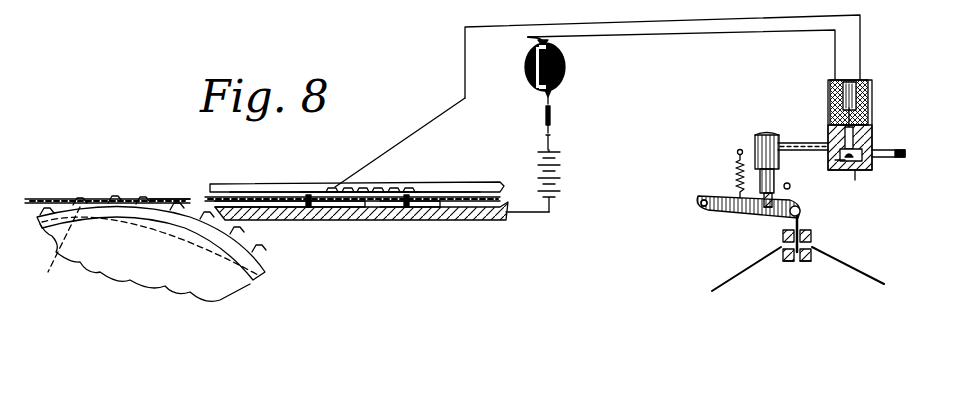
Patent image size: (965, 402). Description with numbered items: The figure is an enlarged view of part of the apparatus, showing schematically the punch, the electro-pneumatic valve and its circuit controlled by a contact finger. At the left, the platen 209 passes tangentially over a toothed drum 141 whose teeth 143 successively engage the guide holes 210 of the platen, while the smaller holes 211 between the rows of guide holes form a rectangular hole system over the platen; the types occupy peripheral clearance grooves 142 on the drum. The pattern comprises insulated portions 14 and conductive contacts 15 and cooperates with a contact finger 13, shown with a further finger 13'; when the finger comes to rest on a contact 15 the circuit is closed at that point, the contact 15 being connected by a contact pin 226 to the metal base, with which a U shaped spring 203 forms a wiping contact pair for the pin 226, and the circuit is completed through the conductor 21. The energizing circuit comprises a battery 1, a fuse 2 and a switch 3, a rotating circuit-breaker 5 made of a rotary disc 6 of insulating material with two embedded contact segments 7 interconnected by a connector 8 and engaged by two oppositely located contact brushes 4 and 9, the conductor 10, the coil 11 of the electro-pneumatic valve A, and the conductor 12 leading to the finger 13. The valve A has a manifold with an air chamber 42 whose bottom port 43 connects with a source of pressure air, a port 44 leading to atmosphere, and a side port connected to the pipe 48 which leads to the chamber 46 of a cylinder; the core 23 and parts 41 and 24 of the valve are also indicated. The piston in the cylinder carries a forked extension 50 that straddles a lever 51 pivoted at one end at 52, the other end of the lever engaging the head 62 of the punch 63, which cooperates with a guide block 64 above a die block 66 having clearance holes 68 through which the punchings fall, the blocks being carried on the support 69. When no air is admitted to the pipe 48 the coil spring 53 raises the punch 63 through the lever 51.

The platen 209 is at (62, 197).
The teeth 143 is at (105, 197).
The guide holes 210 is at (173, 197).
The holes 211 is at (248, 197).
The peripheral clearance grooves 142 is at (58, 250).
The toothed drum 141 is at (245, 250).
The contact pin 226 is at (320, 205).
The U shaped spring 203 is at (422, 210).
The insulated portions 14 is at (300, 190).
The contact connection 13' is at (360, 162).
The contacts 15 is at (385, 186).
The contact finger 13 is at (401, 142).
The conductor 12 is at (465, 60).
The conductor 10 is at (652, 34).
The contact brush 9 is at (543, 42).
The rotating circuit-breaker 5 is at (562, 54).
The rotary disc 6 is at (564, 74).
The connector 8 is at (531, 64).
The contact segments 7 is at (537, 46).
The contact brush 4 is at (552, 97).
The switch 3 is at (552, 118).
The fuse 2 is at (550, 140).
The battery 1 is at (562, 180).
The conductor 21 is at (538, 214).
The coil 11 is at (870, 95).
The solenoid core 23 is at (850, 84).
The electro-pneumatic valve A is at (872, 120).
The port 44 is at (870, 140).
The air chamber 42 is at (862, 154).
The port 43 is at (906, 154).
The valve chamber 41 is at (838, 158).
The valve stem 24 is at (855, 170).
The pipe 48 is at (800, 142).
The chamber 46 is at (760, 146).
The coil spring 53 is at (722, 174).
The pivot 52 is at (702, 208).
The lever 51 is at (740, 213).
The forked extension 50 is at (772, 210).
The head 62 is at (804, 207).
The punch 63 is at (808, 224).
The guide block 64 is at (814, 236).
The support bracket 69 is at (748, 264).
The clearance holes 68 is at (790, 262).
The die block 66 is at (808, 257).